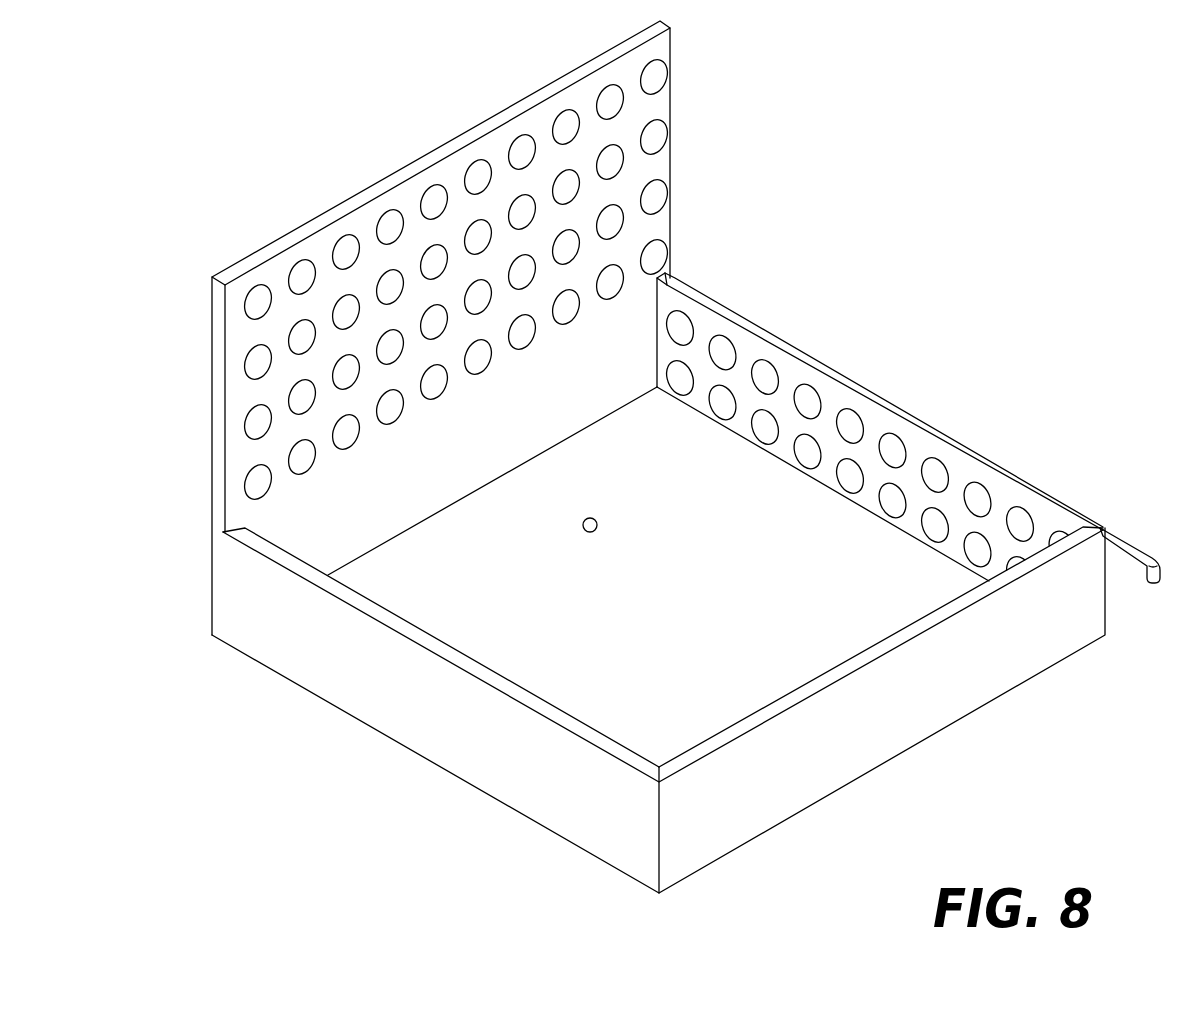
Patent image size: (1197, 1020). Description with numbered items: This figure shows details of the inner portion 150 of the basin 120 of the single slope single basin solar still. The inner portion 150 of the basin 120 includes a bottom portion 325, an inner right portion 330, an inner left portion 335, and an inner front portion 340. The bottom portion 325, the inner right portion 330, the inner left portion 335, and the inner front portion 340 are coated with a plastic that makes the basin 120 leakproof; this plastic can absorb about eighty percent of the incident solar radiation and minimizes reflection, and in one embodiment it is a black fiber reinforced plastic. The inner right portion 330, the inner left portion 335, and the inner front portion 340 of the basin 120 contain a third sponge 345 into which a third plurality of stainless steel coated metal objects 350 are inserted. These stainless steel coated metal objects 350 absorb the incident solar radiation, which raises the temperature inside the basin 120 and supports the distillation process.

The basin 120 is at (922, 710).
The inner portion 150 is at (584, 532).
The bottom portion 325 is at (417, 573).
The inner right portion 330 is at (880, 403).
The inner left portion 335 is at (640, 742).
The inner front portion 340 is at (965, 583).
The third sponge 345 is at (871, 450).
The third plurality of stainless steel coated metal objects 350 is at (850, 472).